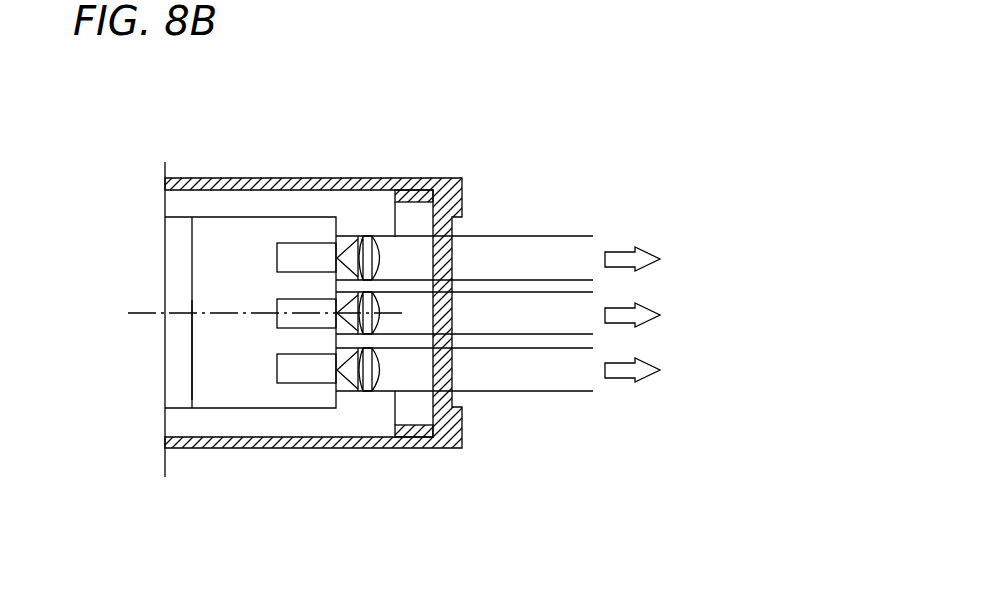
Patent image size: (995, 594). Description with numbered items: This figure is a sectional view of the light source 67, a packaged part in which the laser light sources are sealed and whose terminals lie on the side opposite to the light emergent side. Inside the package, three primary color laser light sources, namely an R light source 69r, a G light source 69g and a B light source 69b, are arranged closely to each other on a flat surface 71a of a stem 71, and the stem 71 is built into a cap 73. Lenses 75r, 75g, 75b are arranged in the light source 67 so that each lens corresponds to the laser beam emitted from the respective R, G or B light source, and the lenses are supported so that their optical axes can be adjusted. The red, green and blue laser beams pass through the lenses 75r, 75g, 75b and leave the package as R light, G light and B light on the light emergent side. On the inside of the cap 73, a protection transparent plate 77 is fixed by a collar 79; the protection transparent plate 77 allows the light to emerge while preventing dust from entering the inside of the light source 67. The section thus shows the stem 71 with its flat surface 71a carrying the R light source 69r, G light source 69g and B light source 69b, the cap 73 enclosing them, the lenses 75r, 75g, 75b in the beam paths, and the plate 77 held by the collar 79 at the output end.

The light source 67 is at (472, 103).
The stem 71 is at (275, 223).
The flat surface 71a is at (212, 385).
The cap 73 is at (383, 178).
The lens 75r is at (368, 236).
The lens 75g is at (378, 330).
The lens 75b is at (373, 390).
The protection transparent plate 77 is at (447, 178).
The collar 79 is at (415, 178).
The R light source 69r is at (277, 252).
The G light source 69g is at (277, 305).
The B light source 69b is at (277, 362).